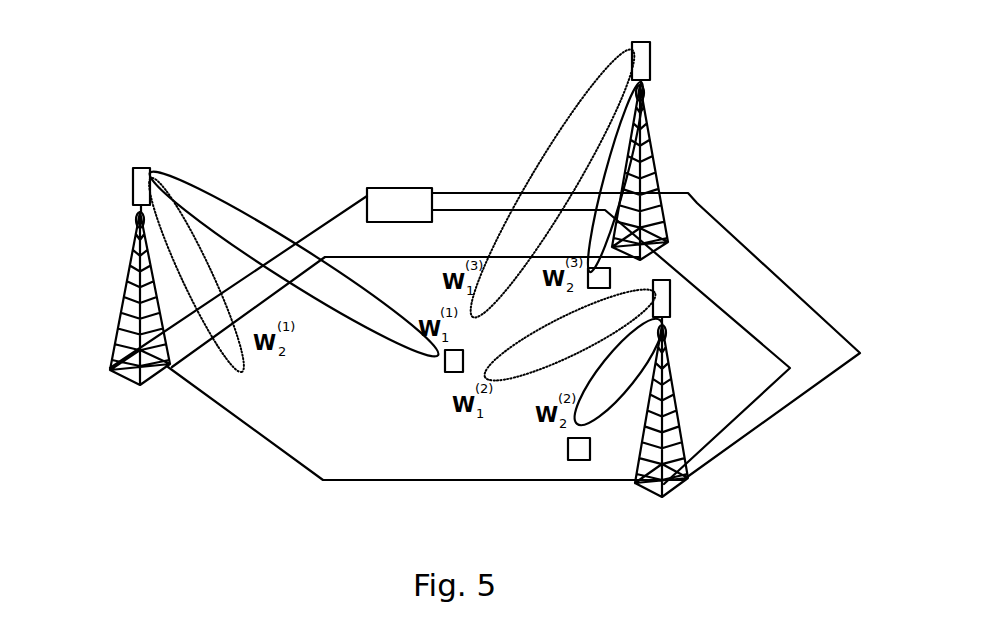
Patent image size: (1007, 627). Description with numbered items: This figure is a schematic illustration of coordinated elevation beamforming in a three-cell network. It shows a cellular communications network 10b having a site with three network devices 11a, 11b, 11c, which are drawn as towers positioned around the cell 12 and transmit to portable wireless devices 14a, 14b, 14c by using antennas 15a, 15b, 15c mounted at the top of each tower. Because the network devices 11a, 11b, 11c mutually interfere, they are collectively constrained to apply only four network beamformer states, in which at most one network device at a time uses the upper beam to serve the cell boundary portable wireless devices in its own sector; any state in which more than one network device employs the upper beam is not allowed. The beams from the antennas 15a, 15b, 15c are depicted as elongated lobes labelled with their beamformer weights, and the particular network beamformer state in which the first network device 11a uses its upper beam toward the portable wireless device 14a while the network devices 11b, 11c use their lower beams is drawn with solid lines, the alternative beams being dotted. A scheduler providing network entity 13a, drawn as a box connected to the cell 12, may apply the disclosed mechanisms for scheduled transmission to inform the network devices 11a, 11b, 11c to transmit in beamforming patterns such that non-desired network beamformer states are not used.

The cellular communications network 10b is at (224, 99).
The network device 11a is at (112, 372).
The network device 11b is at (657, 227).
The network device 11c is at (690, 470).
The cell 12 is at (277, 446).
The scheduler providing network entity 13a is at (399, 205).
The portable wireless device 14a is at (440, 372).
The portable wireless device 14b is at (585, 460).
The portable wireless device 14c is at (610, 278).
The antenna 15a is at (133, 186).
The antenna 15b is at (650, 55).
The antenna 15c is at (670, 300).